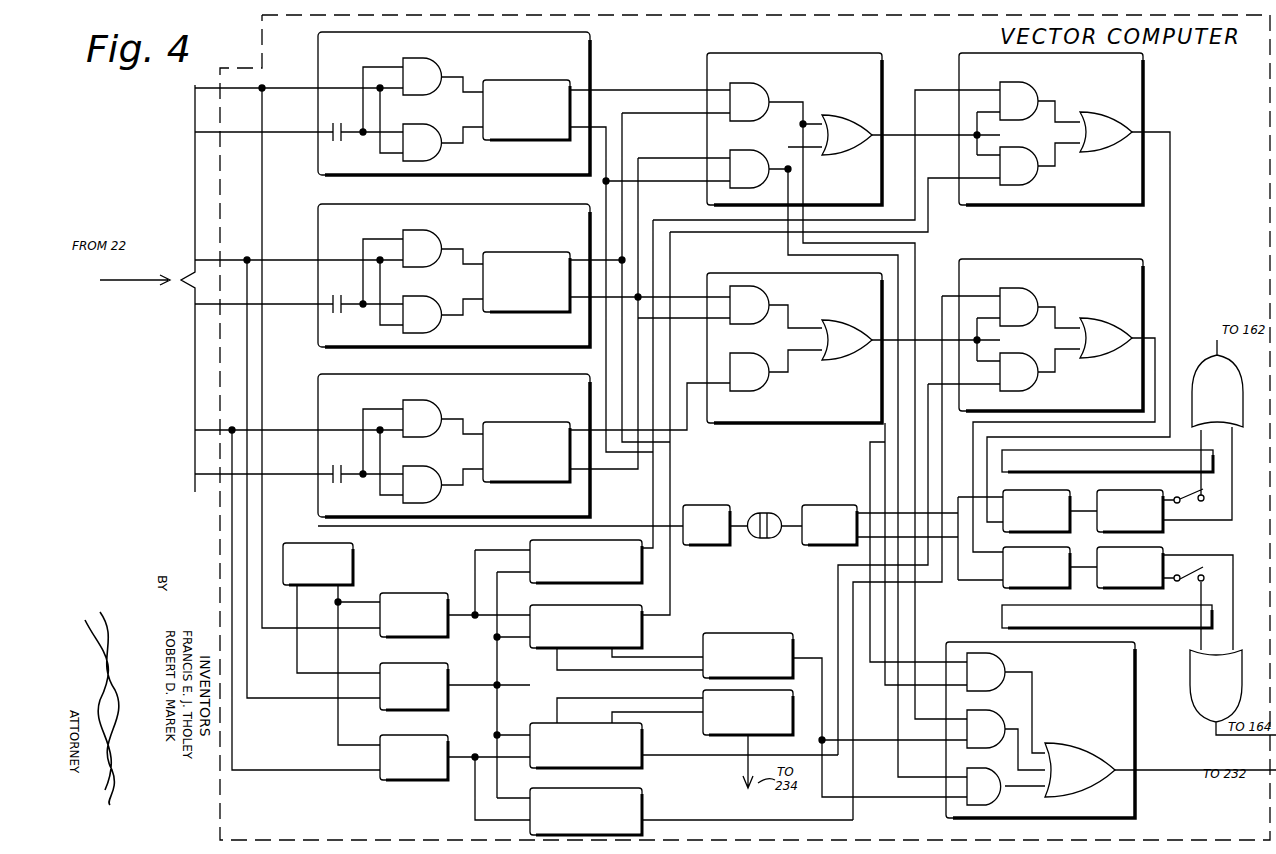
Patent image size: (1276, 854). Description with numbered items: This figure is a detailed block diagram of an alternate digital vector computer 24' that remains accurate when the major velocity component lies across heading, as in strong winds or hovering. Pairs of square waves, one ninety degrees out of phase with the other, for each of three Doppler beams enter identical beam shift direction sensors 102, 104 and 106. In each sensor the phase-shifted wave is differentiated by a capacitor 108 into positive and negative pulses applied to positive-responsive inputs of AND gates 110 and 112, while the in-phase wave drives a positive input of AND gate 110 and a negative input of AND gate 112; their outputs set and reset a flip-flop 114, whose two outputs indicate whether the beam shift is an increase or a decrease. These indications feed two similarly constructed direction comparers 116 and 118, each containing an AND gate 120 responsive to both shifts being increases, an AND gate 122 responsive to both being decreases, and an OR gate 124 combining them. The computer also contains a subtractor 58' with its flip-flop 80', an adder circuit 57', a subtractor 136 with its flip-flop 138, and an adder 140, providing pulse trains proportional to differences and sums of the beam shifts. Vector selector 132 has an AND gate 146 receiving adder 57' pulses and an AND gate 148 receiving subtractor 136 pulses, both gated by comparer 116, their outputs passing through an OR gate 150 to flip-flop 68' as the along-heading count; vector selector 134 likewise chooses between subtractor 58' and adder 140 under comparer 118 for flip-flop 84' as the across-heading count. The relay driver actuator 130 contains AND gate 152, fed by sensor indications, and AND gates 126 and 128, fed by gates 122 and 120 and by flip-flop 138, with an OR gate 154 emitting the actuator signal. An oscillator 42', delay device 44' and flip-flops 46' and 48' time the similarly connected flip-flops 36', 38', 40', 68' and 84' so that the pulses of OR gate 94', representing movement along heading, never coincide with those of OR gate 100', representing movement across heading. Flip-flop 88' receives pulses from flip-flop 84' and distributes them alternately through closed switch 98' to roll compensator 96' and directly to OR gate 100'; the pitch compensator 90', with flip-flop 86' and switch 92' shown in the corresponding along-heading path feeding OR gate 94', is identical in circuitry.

The beam shift direction sensor 102 is at (318, 42).
The beam shift direction sensor 104 is at (318, 214).
The beam shift direction sensor 106 is at (318, 384).
The capacitor 108 is at (337, 312).
The AND gate 110 is at (430, 96).
The AND gate 112 is at (428, 124).
The flip-flop 114 is at (533, 80).
The direction comparer 116 is at (718, 53).
The direction comparer 118 is at (718, 273).
The AND gate 120 is at (762, 120).
The AND gate 122 is at (760, 148).
The OR gate 124 is at (852, 162).
The vector selector 132 is at (968, 53).
The vector selector 134 is at (980, 259).
The AND gate 146 is at (1016, 122).
The AND gate 148 is at (1015, 148).
The OR gate 150 is at (1100, 160).
The relay driver actuator 130 is at (962, 642).
The AND gate 152 is at (992, 690).
The AND gate 126 is at (992, 714).
The AND gate 128 is at (992, 800).
The OR gate 154 is at (1090, 743).
The subtractor 136 is at (536, 605).
The flip-flop 138 is at (786, 633).
The adder 140 is at (536, 788).
The vector computer 24' is at (168, 513).
The flip-flop 36' is at (415, 606).
The flip-flop 38' is at (415, 678).
The flip-flop 40' is at (415, 749).
The oscillator 42' is at (706, 512).
The delay device 44' is at (771, 512).
The flip-flop 46' is at (332, 564).
The flip-flop 48' is at (829, 512).
The adder circuit 57' is at (568, 556).
The subtractor 58' is at (568, 737).
The flip-flop 68' is at (1033, 503).
The flip-flop 80' is at (761, 706).
The flip-flop 84' is at (1026, 575).
The flip-flop 86' is at (1126, 503).
The flip-flop 88' is at (1124, 575).
The pitch compensator 90' is at (1107, 450).
The switch 92' is at (1183, 466).
The OR gate 94' is at (1217, 383).
The roll compensator 96' is at (1085, 616).
The switch 98' is at (1183, 608).
The OR gate 100' is at (1233, 692).